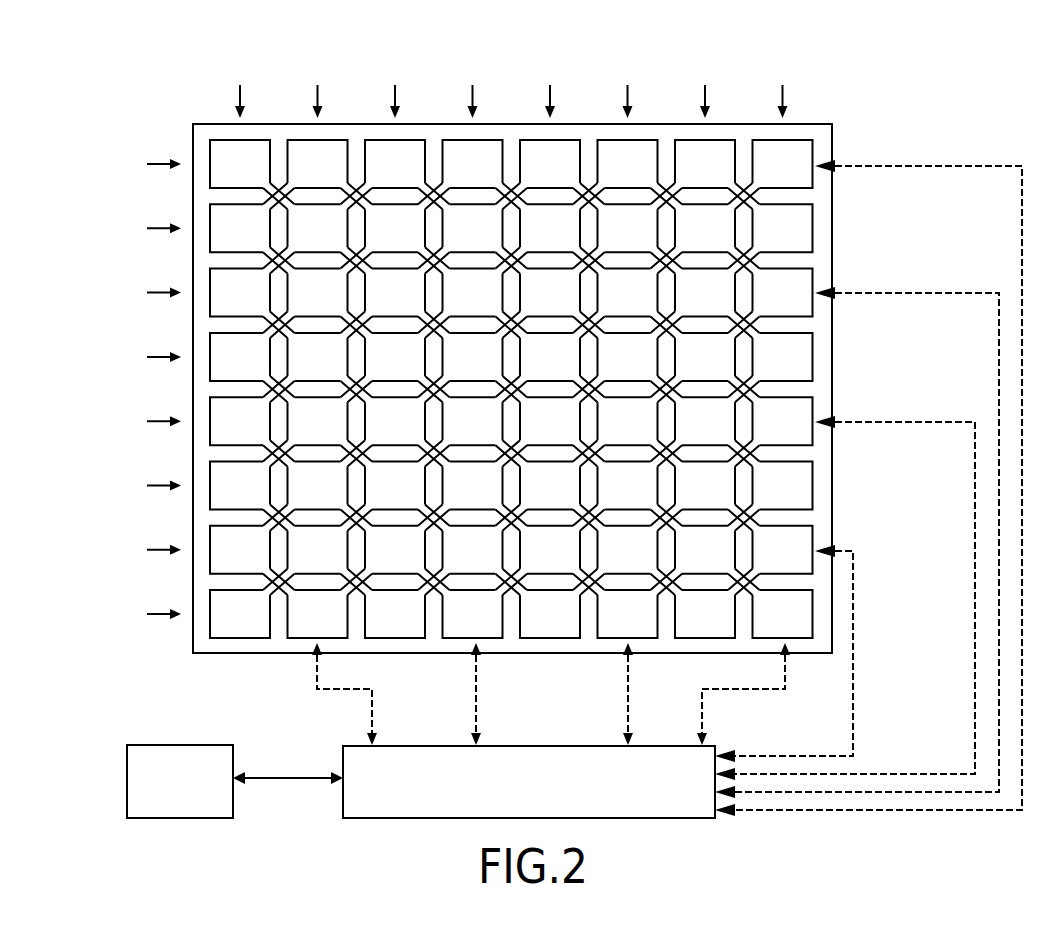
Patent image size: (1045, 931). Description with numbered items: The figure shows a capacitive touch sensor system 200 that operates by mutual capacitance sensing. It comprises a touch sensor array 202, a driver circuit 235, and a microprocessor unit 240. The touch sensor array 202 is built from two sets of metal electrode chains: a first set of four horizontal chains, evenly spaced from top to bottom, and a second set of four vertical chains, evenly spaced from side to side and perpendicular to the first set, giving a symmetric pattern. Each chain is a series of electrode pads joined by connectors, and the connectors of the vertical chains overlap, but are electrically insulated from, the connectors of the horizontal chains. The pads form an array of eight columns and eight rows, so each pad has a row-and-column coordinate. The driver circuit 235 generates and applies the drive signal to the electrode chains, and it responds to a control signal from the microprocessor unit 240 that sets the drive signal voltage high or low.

The touch sensor system 200 is at (88, 110).
The touch sensor array 202 is at (822, 124).
The driver circuit 235 is at (345, 802).
The microprocessor unit (MPU) 240 is at (168, 745).